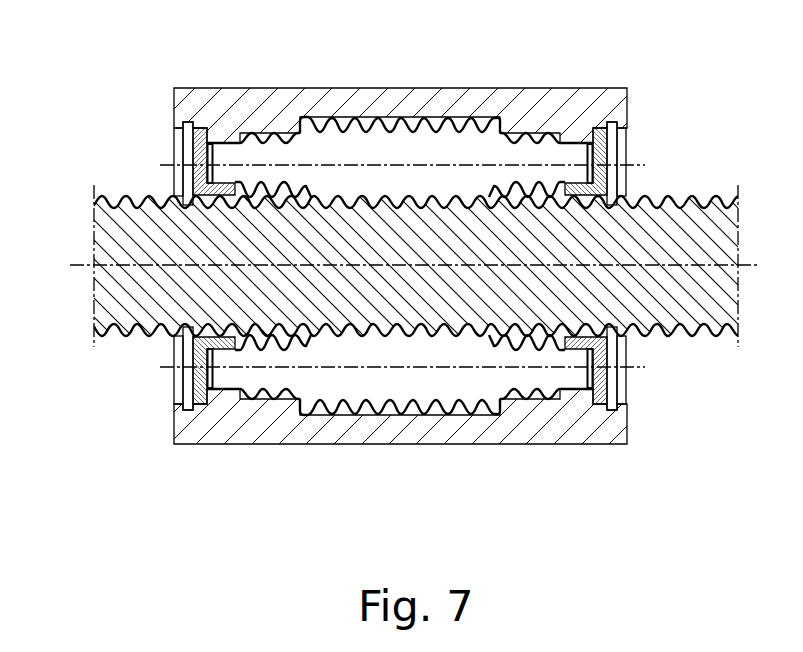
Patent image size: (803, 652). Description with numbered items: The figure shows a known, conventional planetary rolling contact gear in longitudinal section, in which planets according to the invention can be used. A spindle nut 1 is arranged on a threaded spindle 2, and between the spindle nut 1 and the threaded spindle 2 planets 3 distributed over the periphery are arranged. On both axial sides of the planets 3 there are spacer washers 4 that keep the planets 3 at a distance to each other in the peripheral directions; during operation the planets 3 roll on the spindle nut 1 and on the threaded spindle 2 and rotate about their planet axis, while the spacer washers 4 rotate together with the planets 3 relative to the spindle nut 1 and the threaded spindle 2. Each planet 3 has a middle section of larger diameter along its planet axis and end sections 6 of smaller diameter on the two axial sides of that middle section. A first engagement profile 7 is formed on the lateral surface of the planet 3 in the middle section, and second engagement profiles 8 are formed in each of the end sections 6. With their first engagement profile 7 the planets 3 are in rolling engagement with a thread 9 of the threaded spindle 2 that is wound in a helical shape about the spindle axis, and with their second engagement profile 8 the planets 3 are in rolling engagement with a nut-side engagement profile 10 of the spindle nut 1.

The spindle nut 1 is at (228, 95).
The threaded spindle 2 is at (95, 224).
The planets 3 is at (340, 163).
The spacer washers 4 is at (612, 148).
The end sections 6 is at (545, 157).
The first engagement profile 7 is at (366, 403).
The second engagement profiles 8 is at (267, 400).
The thread 9 is at (690, 326).
The nut-side engagement profile 10 is at (551, 392).